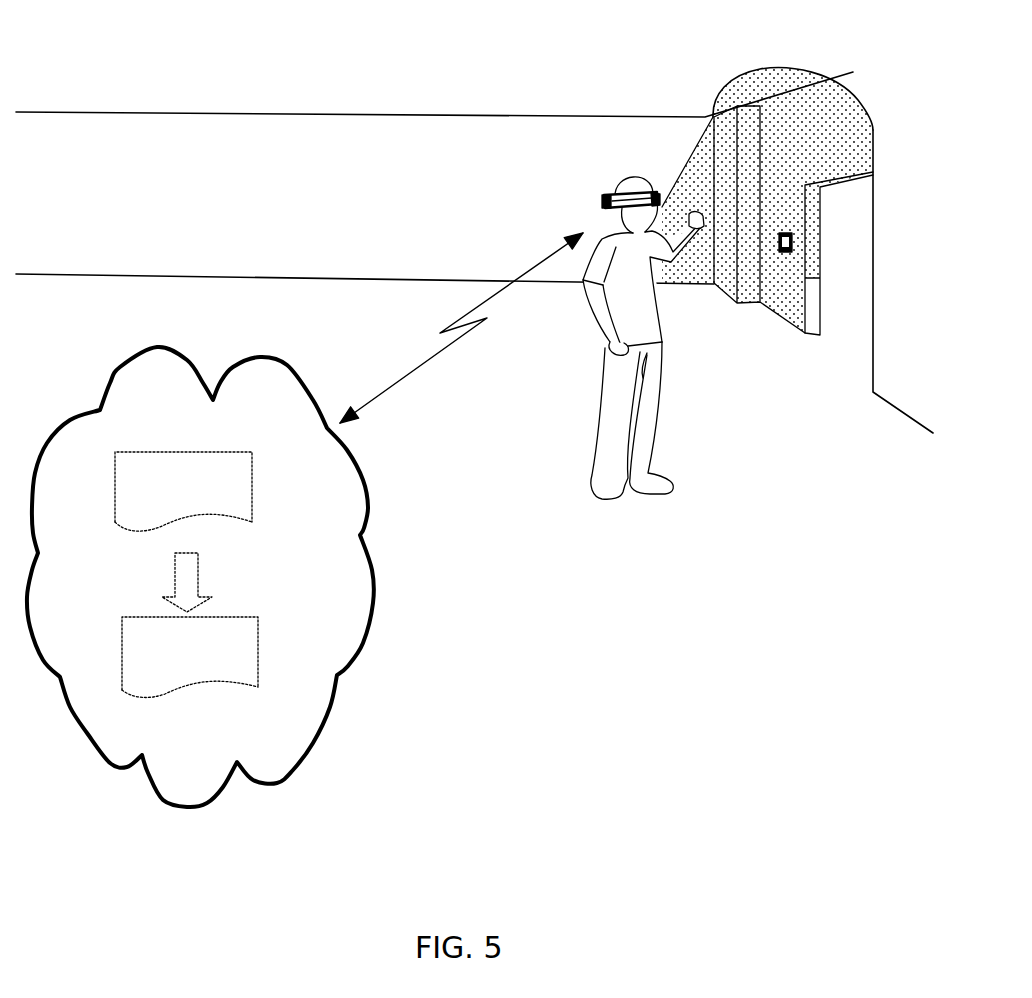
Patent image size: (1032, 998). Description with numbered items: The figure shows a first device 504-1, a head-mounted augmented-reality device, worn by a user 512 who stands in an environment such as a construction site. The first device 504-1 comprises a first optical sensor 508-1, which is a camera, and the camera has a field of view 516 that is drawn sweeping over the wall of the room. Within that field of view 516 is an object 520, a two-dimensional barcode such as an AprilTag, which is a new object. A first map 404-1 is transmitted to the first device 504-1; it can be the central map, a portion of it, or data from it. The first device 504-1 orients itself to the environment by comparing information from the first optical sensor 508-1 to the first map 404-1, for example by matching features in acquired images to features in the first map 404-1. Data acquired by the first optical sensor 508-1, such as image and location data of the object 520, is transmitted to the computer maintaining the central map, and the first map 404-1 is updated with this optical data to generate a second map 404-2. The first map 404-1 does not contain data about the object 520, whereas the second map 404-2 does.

The field of view 516 is at (748, 72).
The first optical sensor 508-1 is at (662, 202).
The first device 504-1 is at (603, 200).
The user 512 is at (612, 398).
The object 520 is at (788, 252).
The first map 404-1 is at (162, 508).
The second map 404-2 is at (168, 676).